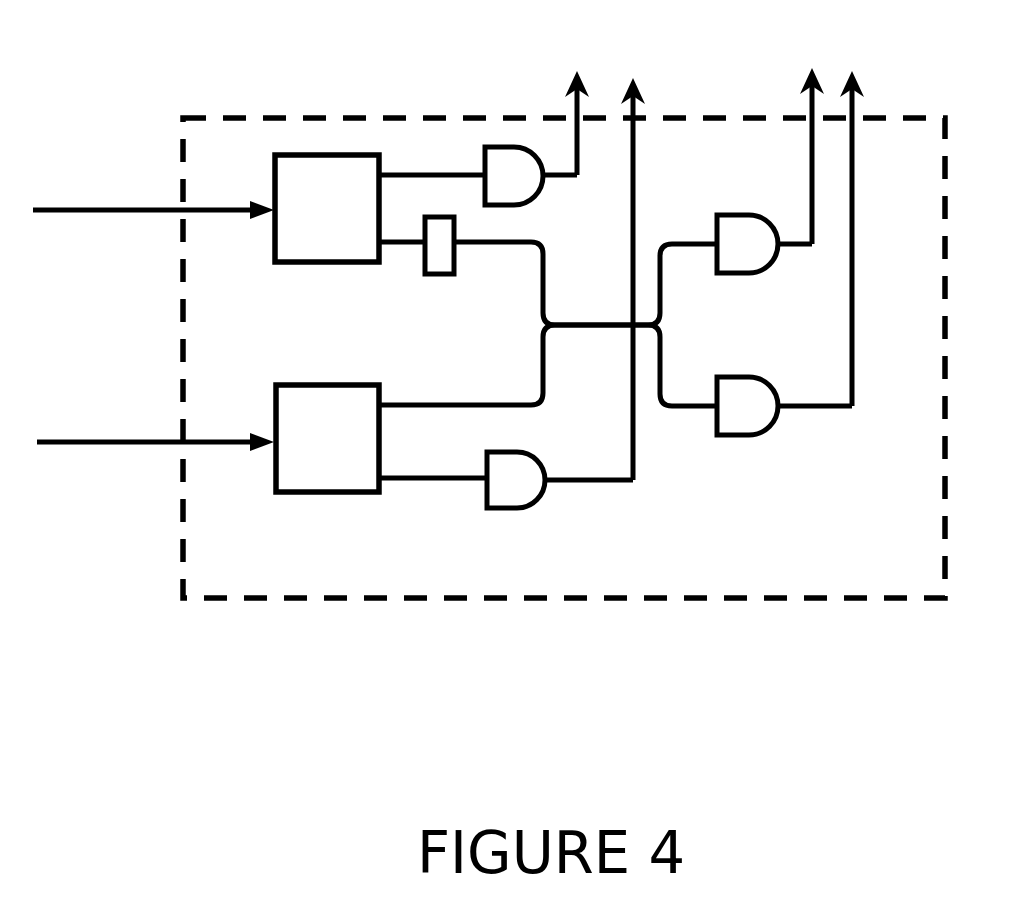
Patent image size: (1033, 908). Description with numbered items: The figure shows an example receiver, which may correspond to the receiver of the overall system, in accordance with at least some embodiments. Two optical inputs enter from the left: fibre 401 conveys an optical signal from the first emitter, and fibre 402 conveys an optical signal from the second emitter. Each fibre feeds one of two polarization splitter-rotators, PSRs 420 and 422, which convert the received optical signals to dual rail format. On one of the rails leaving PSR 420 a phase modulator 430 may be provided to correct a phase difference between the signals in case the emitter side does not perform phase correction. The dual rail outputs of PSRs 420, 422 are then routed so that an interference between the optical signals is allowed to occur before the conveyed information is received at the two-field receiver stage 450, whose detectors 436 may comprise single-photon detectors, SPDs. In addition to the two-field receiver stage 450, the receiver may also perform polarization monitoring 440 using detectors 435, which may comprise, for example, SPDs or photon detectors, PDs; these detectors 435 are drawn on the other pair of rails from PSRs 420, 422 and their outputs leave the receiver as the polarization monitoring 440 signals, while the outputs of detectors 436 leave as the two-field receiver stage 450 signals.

The fibre 401 is at (153, 188).
The fibre 402 is at (153, 421).
The PSR 420 is at (327, 208).
The PSR 422 is at (327, 438).
The phase modulator 430 is at (438, 256).
The detectors 435 is at (525, 177).
The detectors 436 is at (760, 253).
The polarization monitoring 440 is at (605, 249).
The two-field receiver stage 450 is at (832, 209).